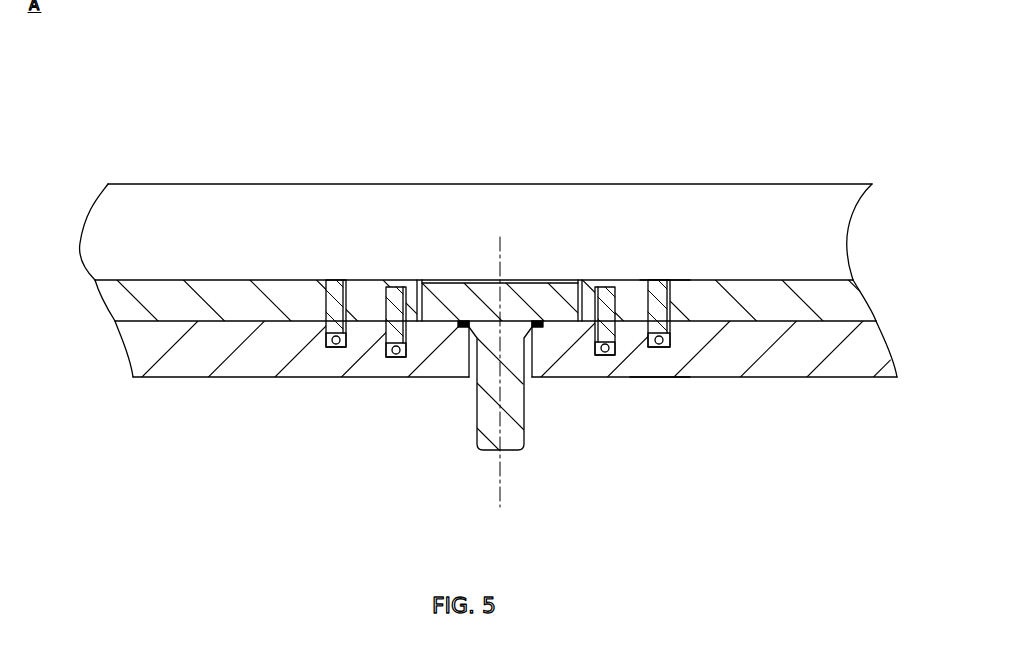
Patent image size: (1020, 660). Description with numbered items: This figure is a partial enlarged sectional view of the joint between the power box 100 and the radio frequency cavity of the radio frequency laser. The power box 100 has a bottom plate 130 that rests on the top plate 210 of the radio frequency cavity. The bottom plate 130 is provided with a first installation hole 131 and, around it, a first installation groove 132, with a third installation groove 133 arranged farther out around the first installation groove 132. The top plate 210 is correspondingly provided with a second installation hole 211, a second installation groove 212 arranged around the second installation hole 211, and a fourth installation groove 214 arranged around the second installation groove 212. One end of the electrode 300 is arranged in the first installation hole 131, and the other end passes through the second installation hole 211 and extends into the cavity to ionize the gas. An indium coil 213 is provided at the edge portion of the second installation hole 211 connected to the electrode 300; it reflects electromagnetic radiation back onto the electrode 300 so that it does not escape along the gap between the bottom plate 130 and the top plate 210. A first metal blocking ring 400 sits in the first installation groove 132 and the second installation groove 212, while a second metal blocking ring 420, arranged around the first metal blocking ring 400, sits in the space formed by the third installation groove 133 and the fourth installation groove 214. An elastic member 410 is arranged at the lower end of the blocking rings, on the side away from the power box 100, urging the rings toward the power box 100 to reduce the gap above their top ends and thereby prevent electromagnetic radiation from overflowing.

The power box 100 is at (208, 248).
The bottom plate 130 is at (118, 307).
The first installation hole 131 is at (513, 320).
The first installation groove 132 is at (463, 290).
The third installation groove 133 is at (672, 282).
The top plate 210 is at (147, 340).
The second installation hole 211 is at (525, 337).
The second installation groove 212 is at (393, 357).
The indium coil 213 is at (463, 321).
The fourth installation groove 214 is at (651, 343).
The electrode 300 is at (435, 280).
The first metal blocking ring 400 is at (603, 285).
The elastic member 410 is at (613, 355).
The second metal blocking ring 420 is at (663, 280).